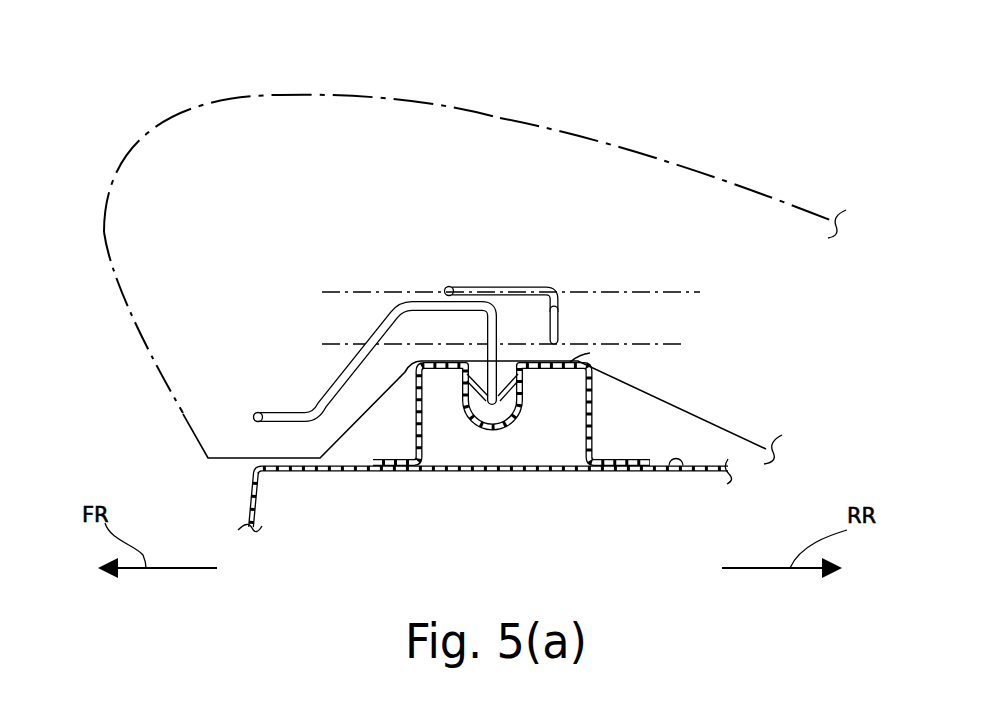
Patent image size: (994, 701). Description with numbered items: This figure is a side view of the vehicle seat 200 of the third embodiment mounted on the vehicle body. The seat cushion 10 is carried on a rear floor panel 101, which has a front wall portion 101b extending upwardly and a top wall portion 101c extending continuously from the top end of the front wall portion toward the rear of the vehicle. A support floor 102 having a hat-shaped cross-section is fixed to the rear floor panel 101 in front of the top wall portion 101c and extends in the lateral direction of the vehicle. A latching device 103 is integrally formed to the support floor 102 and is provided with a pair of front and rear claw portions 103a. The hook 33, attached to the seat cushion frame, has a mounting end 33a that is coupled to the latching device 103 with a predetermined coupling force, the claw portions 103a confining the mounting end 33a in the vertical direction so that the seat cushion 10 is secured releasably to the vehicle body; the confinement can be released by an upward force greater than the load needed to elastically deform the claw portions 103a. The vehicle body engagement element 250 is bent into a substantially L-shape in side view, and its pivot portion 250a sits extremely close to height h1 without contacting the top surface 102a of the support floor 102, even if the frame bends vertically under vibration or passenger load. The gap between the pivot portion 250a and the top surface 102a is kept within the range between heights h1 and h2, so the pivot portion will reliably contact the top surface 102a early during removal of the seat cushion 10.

The seat cushion 10 is at (492, 115).
The vehicle seat 200 is at (670, 152).
The vehicle body engagement element 250 is at (492, 282).
The pivot portion 250a is at (559, 342).
The height h1 is at (691, 346).
The height h2 is at (662, 290).
The hook 33 is at (338, 367).
The mounting end 33a is at (488, 406).
The rear floor panel 101 is at (702, 462).
The front wall portion 101b is at (248, 504).
The top wall portion 101c is at (689, 477).
The support floor 102 is at (408, 430).
The top surface 102a is at (590, 353).
The latching device 103 is at (514, 433).
The claw portions 103a is at (525, 403).